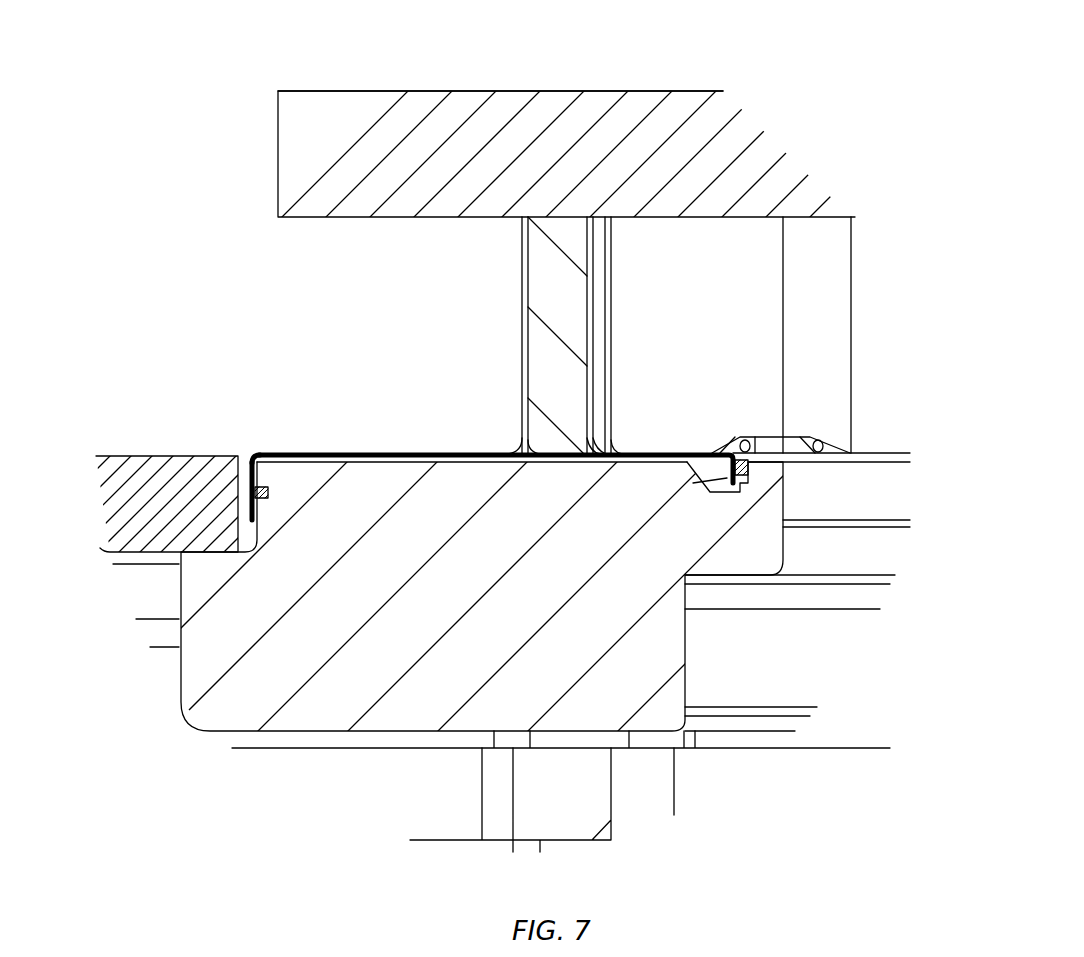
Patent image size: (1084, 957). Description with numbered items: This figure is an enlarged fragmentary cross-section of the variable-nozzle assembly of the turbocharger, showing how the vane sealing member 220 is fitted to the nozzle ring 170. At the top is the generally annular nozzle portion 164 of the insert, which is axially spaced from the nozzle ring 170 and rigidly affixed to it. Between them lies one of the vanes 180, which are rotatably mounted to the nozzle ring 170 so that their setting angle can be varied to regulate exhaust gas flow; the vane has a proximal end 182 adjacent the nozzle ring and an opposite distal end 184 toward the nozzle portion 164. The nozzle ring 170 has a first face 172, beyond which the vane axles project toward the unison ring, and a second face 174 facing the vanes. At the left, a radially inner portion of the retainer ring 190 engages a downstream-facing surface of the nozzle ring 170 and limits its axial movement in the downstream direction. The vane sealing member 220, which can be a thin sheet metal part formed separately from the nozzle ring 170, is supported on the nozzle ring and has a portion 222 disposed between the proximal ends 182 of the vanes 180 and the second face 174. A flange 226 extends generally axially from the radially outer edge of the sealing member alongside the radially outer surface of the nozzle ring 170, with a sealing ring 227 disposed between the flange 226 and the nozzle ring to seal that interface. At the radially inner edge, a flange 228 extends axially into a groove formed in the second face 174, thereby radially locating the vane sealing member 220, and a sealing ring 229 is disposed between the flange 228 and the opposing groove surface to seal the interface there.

The nozzle portion 164 is at (478, 135).
The vanes 180 is at (668, 242).
The distal ends 184 is at (776, 325).
The proximal ends 182 is at (811, 420).
The retainer ring 190 is at (147, 495).
The nozzle ring 170 is at (590, 610).
The first face 172 is at (292, 731).
The second face 174 is at (472, 490).
The vane sealing member 220 is at (262, 440).
The portion 222 is at (370, 450).
The flange 226 is at (247, 507).
The sealing ring 227 is at (270, 494).
The flange 228 is at (691, 517).
The sealing ring 229 is at (750, 468).